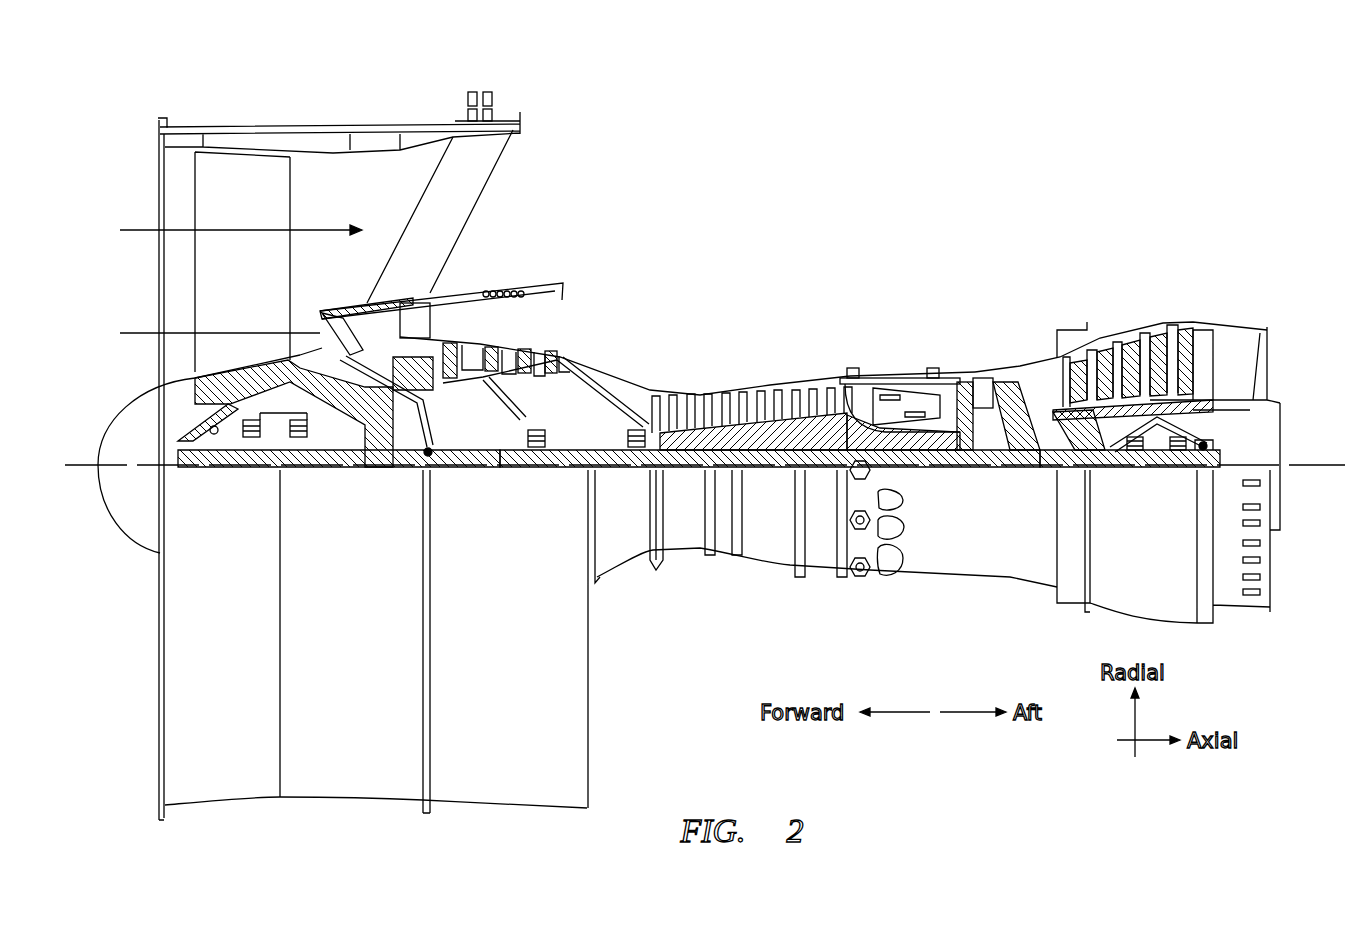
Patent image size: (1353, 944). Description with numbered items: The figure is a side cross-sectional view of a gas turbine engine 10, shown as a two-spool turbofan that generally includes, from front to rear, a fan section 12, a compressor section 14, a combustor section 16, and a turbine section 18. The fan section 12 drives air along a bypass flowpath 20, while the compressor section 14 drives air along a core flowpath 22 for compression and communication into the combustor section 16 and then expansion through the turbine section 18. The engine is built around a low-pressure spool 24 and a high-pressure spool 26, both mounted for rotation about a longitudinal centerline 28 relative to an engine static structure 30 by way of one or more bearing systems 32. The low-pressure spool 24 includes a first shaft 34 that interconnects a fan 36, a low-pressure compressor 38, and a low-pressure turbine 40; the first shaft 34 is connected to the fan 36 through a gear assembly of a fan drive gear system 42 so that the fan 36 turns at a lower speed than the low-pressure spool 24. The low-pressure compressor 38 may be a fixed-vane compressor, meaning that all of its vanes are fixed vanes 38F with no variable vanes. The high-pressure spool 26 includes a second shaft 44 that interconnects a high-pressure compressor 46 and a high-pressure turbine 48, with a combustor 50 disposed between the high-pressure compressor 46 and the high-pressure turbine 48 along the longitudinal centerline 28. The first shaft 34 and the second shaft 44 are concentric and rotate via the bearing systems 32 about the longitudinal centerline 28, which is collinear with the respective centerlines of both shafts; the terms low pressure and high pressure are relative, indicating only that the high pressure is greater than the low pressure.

The gas turbine engine 10 is at (1022, 181).
The fan section 12 is at (423, 102).
The compressor section 14 is at (432, 247).
The combustor section 16 is at (965, 247).
The turbine section 18 is at (1206, 247).
The bypass flowpath 20 is at (128, 228).
The core flowpath 22 is at (128, 331).
The low-pressure spool 24 is at (773, 470).
The high-pressure spool 26 is at (766, 383).
The longitudinal centerline 28 is at (1307, 463).
The engine static structure 30 is at (823, 567).
The bearing systems 32 is at (1043, 440).
The first shaft 34 is at (603, 462).
The fan 36 is at (218, 277).
The low-pressure compressor 38 is at (525, 342).
The fixed vanes 38F is at (510, 348).
The low-pressure turbine 40 is at (1133, 333).
The fan drive gear system 42 is at (380, 476).
The second shaft 44 is at (958, 452).
The high-pressure compressor 46 is at (733, 386).
The high-pressure turbine 48 is at (983, 379).
The combustor 50 is at (903, 400).